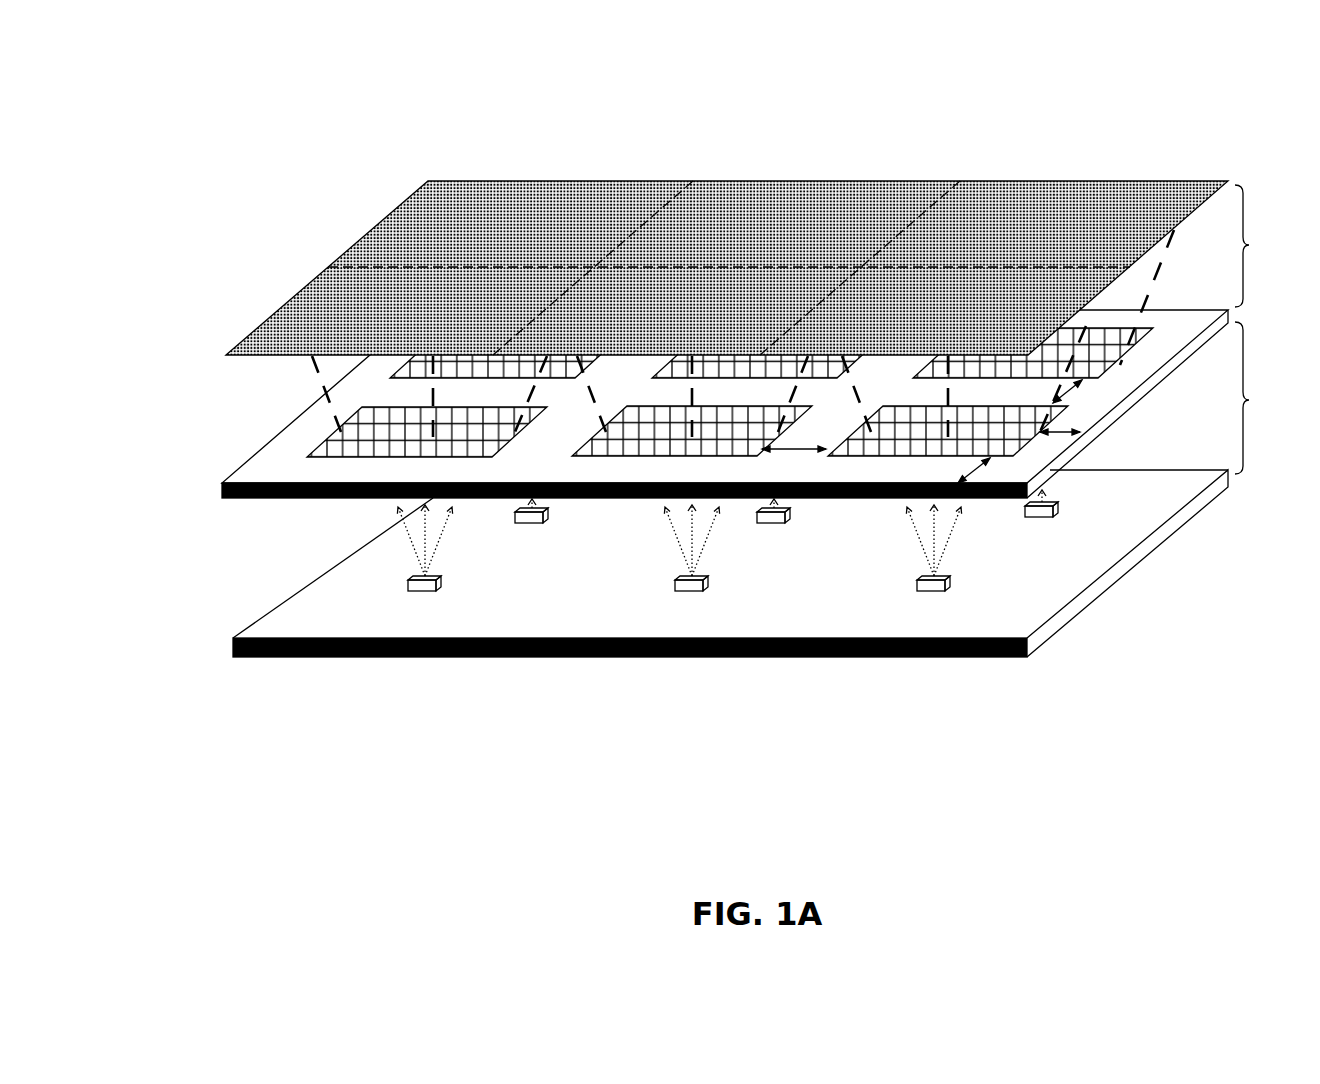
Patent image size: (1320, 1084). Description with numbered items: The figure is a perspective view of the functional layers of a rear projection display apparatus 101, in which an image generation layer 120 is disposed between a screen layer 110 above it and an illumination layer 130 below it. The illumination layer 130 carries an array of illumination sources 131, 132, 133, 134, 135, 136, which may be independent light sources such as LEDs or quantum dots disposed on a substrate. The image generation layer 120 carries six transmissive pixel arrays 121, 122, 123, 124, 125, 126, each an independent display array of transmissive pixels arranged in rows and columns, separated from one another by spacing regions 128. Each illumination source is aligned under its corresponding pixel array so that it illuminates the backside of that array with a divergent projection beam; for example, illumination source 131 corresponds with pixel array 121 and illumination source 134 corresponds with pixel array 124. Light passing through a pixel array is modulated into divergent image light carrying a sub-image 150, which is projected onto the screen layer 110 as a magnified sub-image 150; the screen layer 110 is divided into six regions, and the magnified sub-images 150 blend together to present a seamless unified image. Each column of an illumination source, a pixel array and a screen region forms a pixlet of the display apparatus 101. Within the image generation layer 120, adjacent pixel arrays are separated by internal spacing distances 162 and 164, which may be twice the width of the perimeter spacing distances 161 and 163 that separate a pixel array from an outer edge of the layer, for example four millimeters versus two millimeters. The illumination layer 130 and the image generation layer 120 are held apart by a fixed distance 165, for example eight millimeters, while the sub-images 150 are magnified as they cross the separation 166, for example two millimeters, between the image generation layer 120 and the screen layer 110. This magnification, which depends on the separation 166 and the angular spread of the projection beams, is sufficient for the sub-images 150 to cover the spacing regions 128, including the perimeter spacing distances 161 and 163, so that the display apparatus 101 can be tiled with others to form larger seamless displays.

The display apparatus 101 is at (346, 104).
The screen layer 110 is at (328, 268).
The image generation layer 120 is at (270, 443).
The transmissive pixel array 121 is at (401, 379).
The transmissive pixel array 122 is at (658, 376).
The transmissive pixel array 123 is at (913, 376).
The transmissive pixel array 124 is at (441, 458).
The transmissive pixel array 125 is at (687, 457).
The transmissive pixel array 126 is at (893, 457).
The spacing region 128 is at (266, 471).
The illumination layer 130 is at (285, 602).
The illumination source 131 is at (516, 521).
The illumination source 132 is at (768, 524).
The illumination source 133 is at (1030, 518).
The illumination source 134 is at (416, 590).
The illumination source 135 is at (680, 592).
The illumination source 136 is at (924, 592).
The sub-image 150 is at (481, 231).
The perimeter spacing distance 161 is at (968, 472).
The internal spacing distance 162 is at (806, 452).
The perimeter spacing distance 163 is at (1048, 440).
The internal spacing distance 164 is at (1078, 390).
The fixed distance 165 is at (1265, 398).
The separation 166 is at (1264, 246).